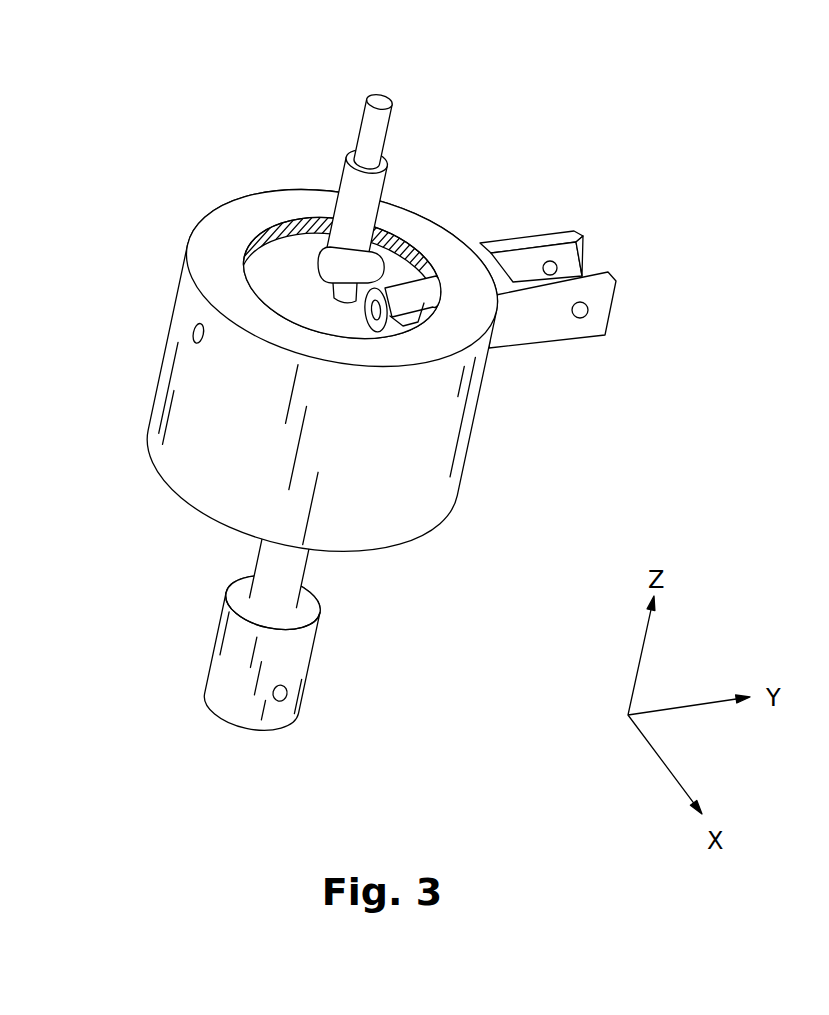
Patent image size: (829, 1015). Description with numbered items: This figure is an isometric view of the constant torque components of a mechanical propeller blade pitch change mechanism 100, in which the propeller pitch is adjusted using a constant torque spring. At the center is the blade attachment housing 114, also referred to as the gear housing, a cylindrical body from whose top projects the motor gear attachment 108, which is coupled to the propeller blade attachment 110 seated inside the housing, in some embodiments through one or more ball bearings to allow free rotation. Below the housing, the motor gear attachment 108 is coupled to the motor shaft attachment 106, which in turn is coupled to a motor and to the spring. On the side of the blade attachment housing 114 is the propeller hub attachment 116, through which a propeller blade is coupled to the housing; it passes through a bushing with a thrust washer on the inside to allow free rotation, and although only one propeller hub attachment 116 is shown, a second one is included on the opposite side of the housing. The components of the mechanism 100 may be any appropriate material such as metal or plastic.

The mechanical propeller blade pitch change mechanism 100 is at (157, 51).
The motor shaft attachment 106 is at (224, 673).
The motor gear attachment 108 is at (385, 131).
The propeller blade attachment 110 is at (405, 297).
The blade attachment housing 114 is at (167, 397).
The propeller hub attachment 116 is at (527, 330).